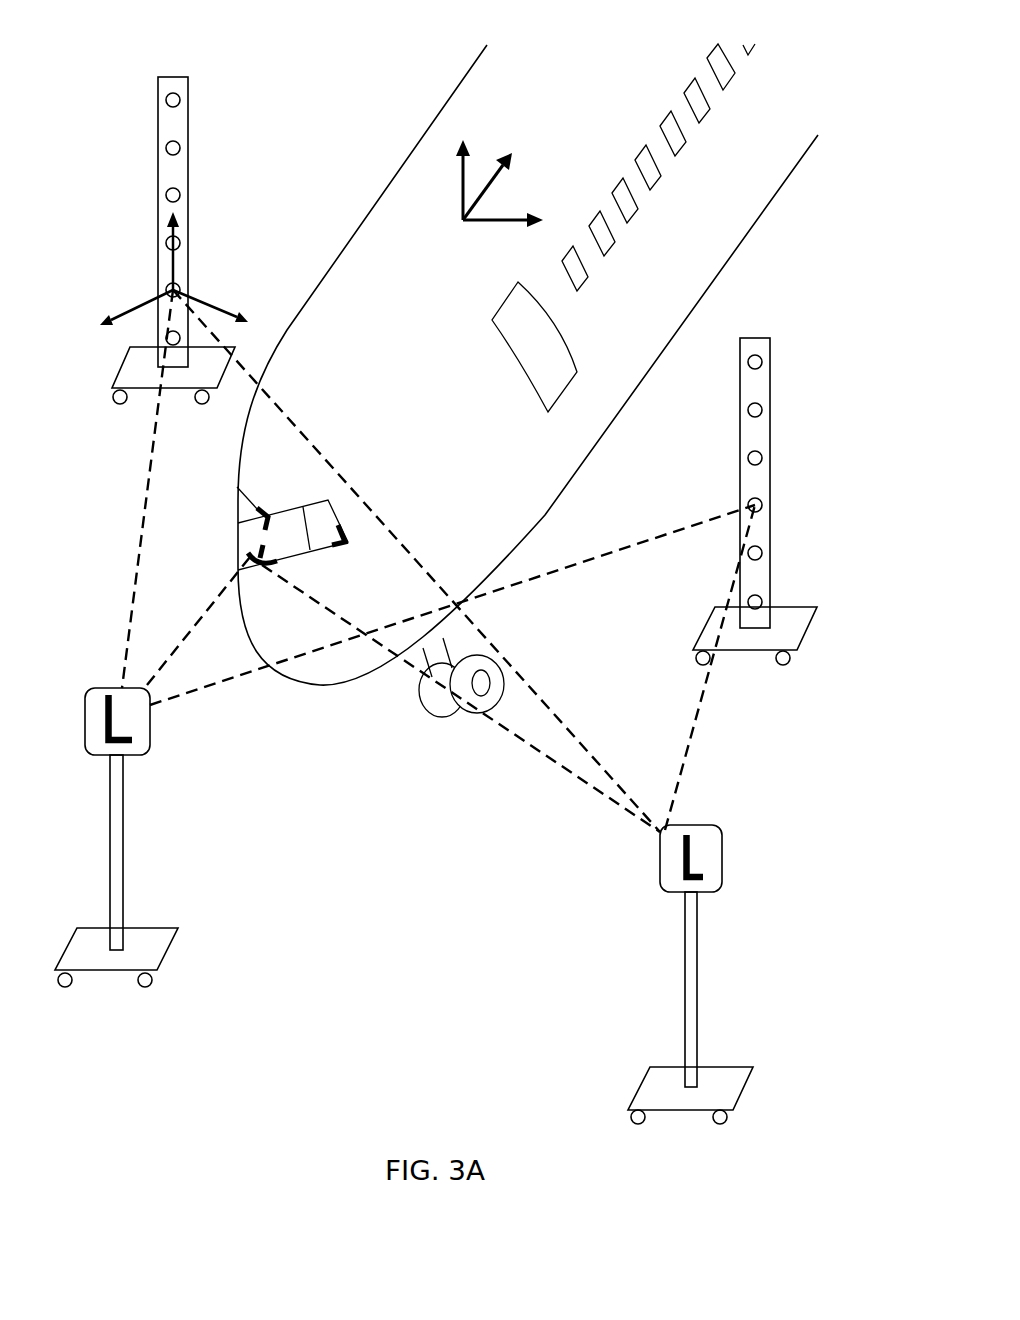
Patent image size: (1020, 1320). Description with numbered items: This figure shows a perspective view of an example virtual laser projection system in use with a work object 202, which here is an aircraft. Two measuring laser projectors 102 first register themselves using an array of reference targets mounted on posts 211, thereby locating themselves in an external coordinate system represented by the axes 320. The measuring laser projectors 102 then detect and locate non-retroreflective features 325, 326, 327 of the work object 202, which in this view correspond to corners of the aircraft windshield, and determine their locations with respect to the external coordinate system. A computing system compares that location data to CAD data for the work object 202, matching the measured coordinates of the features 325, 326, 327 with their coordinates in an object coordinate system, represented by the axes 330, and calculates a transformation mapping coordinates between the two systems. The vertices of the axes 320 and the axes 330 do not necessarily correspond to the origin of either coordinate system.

The measuring laser projector 102 is at (145, 735).
The work object 202 is at (348, 255).
The post 211 is at (163, 123).
The axes 320 is at (172, 272).
The feature 325 is at (247, 557).
The feature 326 is at (238, 523).
The feature 327 is at (340, 527).
The axes 330 is at (463, 188).